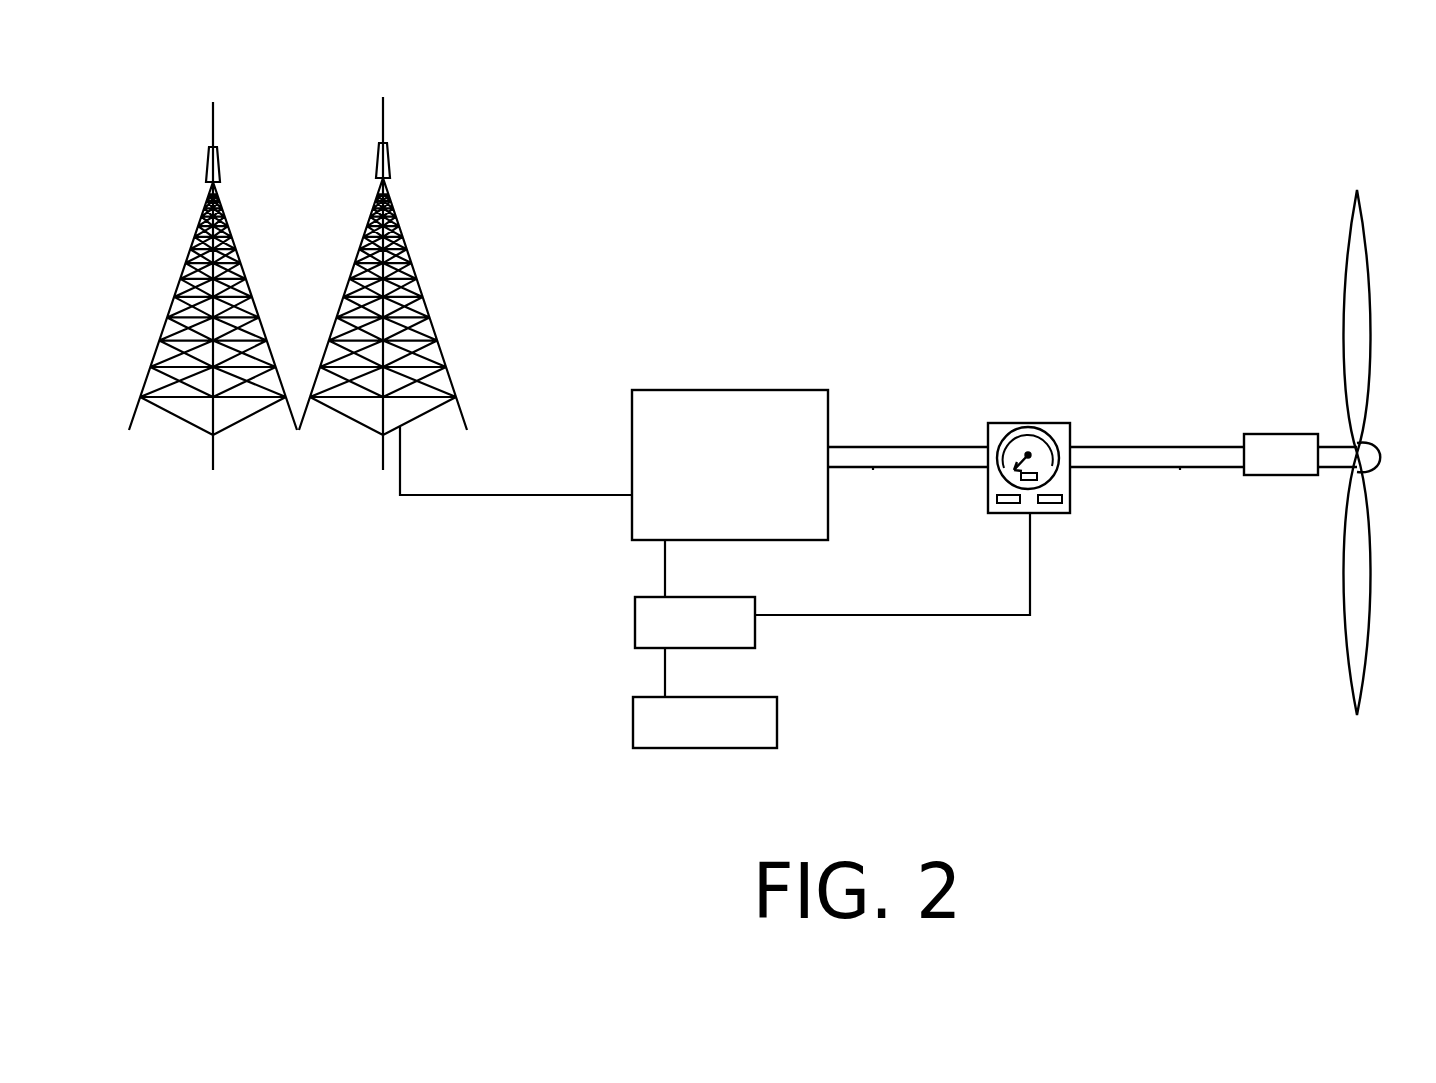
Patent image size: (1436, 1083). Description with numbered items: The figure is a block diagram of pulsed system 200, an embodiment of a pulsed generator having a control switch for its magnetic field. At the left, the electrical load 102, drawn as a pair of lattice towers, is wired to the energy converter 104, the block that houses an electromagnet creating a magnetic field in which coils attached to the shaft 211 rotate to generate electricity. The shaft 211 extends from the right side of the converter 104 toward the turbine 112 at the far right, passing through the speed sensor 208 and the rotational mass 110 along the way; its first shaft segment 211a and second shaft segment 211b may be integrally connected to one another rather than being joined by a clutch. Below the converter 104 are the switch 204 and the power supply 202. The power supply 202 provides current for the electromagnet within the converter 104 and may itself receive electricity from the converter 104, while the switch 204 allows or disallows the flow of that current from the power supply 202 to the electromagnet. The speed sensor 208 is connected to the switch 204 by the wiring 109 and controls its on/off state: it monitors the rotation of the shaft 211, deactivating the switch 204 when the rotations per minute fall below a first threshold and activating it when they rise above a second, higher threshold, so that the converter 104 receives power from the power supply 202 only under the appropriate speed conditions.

The pulsed system 200 is at (852, 59).
The electrical load 102 is at (407, 240).
The converter 104 is at (651, 390).
The wiring 109 is at (1028, 598).
The rotational mass 110 is at (1306, 434).
The turbine 112 is at (1364, 680).
The power supply 202 is at (633, 738).
The switch 204 is at (635, 628).
The speed sensor 208 is at (1060, 423).
The shaft 211 is at (1160, 447).
The first shaft segment 211a is at (1180, 467).
The second shaft segment 211b is at (873, 467).